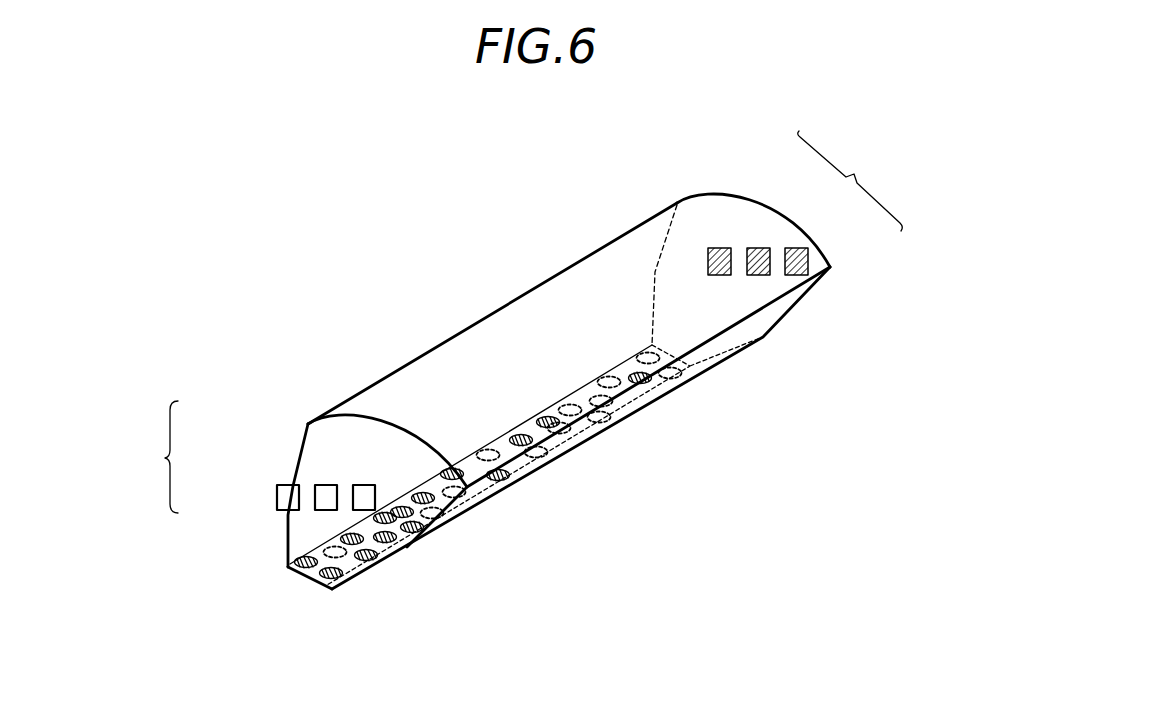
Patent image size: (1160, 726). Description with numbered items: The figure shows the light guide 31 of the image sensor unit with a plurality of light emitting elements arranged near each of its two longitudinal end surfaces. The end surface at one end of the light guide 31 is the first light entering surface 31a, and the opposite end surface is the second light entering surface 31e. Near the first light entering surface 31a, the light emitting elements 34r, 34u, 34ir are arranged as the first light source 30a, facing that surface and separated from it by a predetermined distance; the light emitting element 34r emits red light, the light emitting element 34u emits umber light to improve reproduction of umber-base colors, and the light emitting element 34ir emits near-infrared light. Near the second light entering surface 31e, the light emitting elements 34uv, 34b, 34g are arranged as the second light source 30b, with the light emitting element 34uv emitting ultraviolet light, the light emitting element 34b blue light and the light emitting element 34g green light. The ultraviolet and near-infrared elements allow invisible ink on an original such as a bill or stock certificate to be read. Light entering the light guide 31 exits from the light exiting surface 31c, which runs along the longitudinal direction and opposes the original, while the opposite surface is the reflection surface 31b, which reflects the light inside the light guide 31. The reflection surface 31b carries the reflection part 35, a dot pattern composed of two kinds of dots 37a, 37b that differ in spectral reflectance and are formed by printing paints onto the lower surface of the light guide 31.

The light guide 31 is at (527, 407).
The first light entering surface 31a is at (327, 433).
The reflection surface 31b is at (313, 582).
The light exiting surface 31c is at (437, 365).
The second light entering surface 31e is at (727, 212).
The first light source 30a is at (236, 458).
The second light source 30b is at (807, 203).
The light emitting element 34r is at (364, 485).
The light emitting element 34u is at (325, 485).
The light emitting element 34ir is at (277, 496).
The light emitting element 34uv is at (720, 247).
The light emitting element 34b is at (758, 247).
The light emitting element 34g is at (800, 247).
The reflection part 35 is at (806, 386).
The dot 37a is at (448, 519).
The dot 37b is at (378, 568).